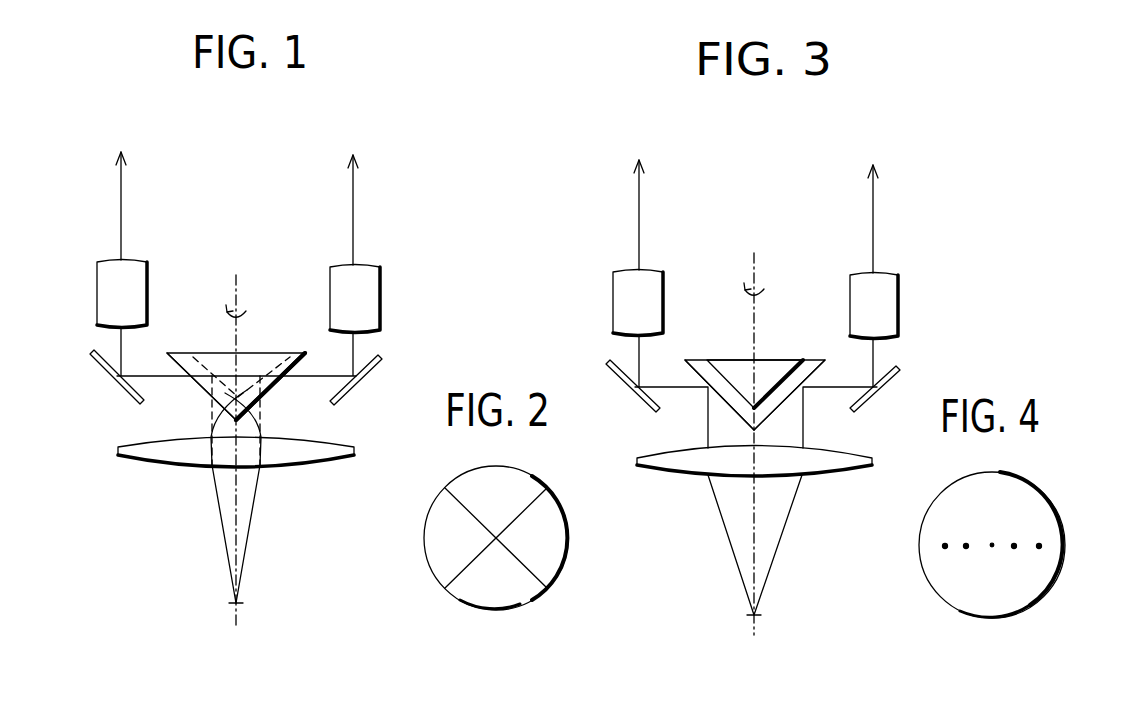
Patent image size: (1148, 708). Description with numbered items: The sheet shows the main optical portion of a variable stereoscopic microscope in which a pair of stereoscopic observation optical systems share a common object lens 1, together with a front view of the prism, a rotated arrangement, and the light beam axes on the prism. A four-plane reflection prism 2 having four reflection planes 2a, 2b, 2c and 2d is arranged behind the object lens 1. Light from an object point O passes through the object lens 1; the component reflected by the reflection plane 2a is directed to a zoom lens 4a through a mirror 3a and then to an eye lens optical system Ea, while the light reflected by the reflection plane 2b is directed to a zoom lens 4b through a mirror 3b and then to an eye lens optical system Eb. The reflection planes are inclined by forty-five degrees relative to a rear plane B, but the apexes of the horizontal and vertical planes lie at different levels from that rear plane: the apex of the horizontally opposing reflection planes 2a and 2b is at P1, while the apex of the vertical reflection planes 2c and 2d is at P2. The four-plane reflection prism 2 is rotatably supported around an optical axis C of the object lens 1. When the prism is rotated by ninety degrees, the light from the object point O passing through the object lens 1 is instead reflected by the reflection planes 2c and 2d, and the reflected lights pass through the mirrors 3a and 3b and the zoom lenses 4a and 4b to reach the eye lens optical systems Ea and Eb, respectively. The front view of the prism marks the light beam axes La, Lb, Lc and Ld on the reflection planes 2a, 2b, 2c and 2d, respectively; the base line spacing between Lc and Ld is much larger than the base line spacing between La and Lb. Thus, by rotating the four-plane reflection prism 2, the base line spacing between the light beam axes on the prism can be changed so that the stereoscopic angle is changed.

In FIG. 1, the object lens 1 is at (118, 455).
In FIG. 3, the object lens 1 is at (643, 463).
In FIG. 1, the four-plane reflection prism 2 is at (175, 352).
In FIG. 2, the four-plane reflection prism 2 is at (450, 478).
In FIG. 3, the four-plane reflection prism 2 is at (692, 358).
In FIG. 1, the reflection plane 2a is at (201, 368).
In FIG. 2, the reflection plane 2a is at (435, 558).
In FIG. 1, the reflection plane 2b is at (264, 392).
In FIG. 2, the reflection plane 2c is at (500, 480).
In FIG. 3, the reflection plane 2c is at (693, 373).
In FIG. 2, the reflection plane 2d is at (518, 593).
In FIG. 3, the reflection plane 2d is at (817, 373).
In FIG. 1, the mirror 3a is at (112, 380).
In FIG. 3, the mirror 3a is at (637, 397).
In FIG. 1, the mirror 3b is at (358, 385).
In FIG. 3, the mirror 3b is at (873, 402).
In FIG. 1, the zoom lens 4a is at (105, 290).
In FIG. 3, the zoom lens 4a is at (622, 300).
In FIG. 1, the zoom lens 4b is at (373, 285).
In FIG. 3, the zoom lens 4b is at (891, 300).
In FIG. 1, the rear plane B is at (211, 352).
In FIG. 3, the rear plane B is at (728, 357).
In FIG. 1, the optical axis C is at (238, 289).
In FIG. 3, the optical axis C is at (757, 277).
In FIG. 4, the optical axis C is at (992, 549).
In FIG. 1, the eye lens optical system Ea is at (120, 195).
In FIG. 3, the eye lens optical system Ea is at (638, 201).
In FIG. 1, the eye lens optical system Eb is at (354, 197).
In FIG. 3, the eye lens optical system Eb is at (874, 203).
In FIG. 1, the object point O is at (236, 504).
In FIG. 3, the object point O is at (755, 551).
In FIG. 1, the apex P1 is at (211, 445).
In FIG. 2, the apex P1 is at (495, 548).
In FIG. 3, the apex P1 is at (757, 410).
In FIG. 1, the apex P2 is at (262, 445).
In FIG. 3, the apex P2 is at (747, 428).
In FIG. 4, the light beam axis La is at (964, 545).
In FIG. 4, the light beam axis Lb is at (1016, 545).
In FIG. 4, the light beam axis Lc is at (943, 546).
In FIG. 4, the light beam axis Ld is at (1041, 546).